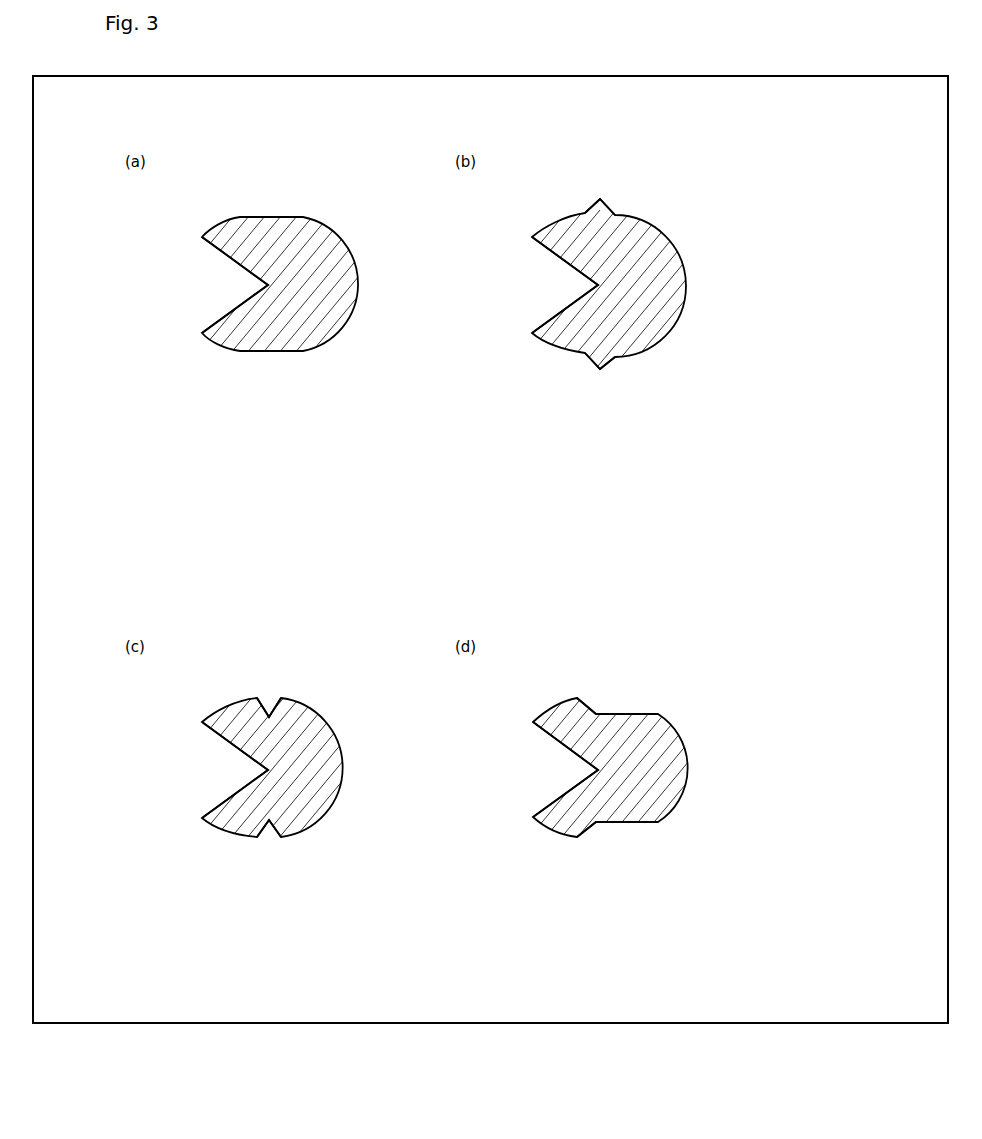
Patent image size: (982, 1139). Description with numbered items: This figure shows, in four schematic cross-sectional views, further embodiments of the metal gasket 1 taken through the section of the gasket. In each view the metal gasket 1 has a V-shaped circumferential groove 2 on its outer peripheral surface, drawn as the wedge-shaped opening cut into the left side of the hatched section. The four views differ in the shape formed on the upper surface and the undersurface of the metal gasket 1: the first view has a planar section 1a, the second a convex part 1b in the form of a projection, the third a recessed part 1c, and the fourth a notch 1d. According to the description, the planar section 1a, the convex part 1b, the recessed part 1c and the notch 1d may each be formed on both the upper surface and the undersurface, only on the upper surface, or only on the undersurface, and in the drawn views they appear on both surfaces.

The metal gasket 1 is at (330, 232).
The planar section 1a is at (285, 207).
The convex part 1b is at (609, 287).
The recessed part 1c is at (274, 772).
The notch 1d is at (617, 771).
The V-shaped circumferential groove 2 is at (189, 285).